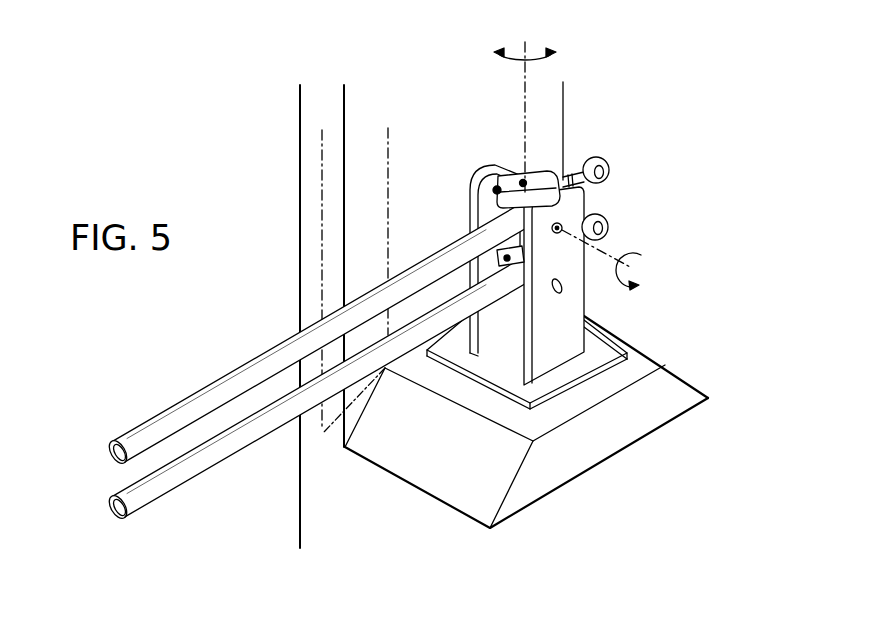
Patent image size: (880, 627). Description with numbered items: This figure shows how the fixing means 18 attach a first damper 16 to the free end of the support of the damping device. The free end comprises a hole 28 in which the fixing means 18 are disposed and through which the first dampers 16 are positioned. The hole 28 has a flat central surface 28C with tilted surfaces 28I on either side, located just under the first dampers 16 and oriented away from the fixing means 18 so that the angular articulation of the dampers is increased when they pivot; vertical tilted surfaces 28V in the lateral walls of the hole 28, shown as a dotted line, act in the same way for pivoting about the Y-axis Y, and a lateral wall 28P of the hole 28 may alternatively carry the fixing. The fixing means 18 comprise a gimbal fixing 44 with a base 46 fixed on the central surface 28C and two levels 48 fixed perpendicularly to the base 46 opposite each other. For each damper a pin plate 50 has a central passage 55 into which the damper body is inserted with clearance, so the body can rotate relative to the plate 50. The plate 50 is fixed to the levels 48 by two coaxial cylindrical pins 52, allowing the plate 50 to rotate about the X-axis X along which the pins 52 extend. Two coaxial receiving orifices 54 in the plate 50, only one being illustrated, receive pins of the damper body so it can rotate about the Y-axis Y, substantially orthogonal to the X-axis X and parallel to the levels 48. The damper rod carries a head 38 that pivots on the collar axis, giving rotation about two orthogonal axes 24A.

The first damper 16 is at (208, 365).
The fixing means 18 is at (620, 249).
The post axis 24A is at (320, 175).
The hole 28 is at (541, 403).
The flat central surface 28C is at (642, 362).
The tilted surface 28I is at (472, 492).
The lateral wall 28P is at (418, 231).
The vertical tilted surface 28V is at (335, 227).
The head 38 is at (593, 157).
The gimbal fixing 44 is at (637, 227).
The base 46 is at (613, 355).
The level 48 is at (488, 337).
The plate 50 is at (537, 193).
The cylindrical pin 52 is at (563, 226).
The receiving orifice 54 is at (521, 181).
The central passage 55 is at (492, 188).
The X-axis X is at (605, 260).
The Y-axis Y is at (522, 109).